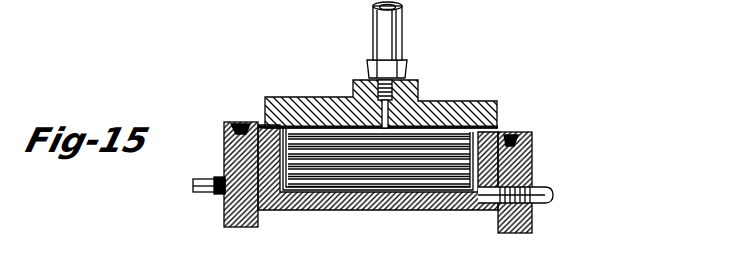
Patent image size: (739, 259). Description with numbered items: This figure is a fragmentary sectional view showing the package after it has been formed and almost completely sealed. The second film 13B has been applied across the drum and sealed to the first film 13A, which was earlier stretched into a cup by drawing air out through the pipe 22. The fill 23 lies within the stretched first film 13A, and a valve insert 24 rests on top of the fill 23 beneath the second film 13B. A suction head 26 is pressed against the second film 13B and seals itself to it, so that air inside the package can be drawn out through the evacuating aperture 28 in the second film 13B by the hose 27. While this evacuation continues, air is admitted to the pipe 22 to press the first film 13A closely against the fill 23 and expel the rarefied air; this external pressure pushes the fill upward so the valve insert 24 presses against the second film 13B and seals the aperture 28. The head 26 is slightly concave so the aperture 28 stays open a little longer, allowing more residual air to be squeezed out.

The first film 13A is at (439, 197).
The second film 13B is at (498, 128).
The pipe 22 is at (553, 192).
The fill 23 is at (303, 142).
The valve insert 24 is at (405, 131).
The suction head 26 is at (478, 95).
The hose 27 is at (403, 30).
The evacuating aperture 28 is at (387, 132).